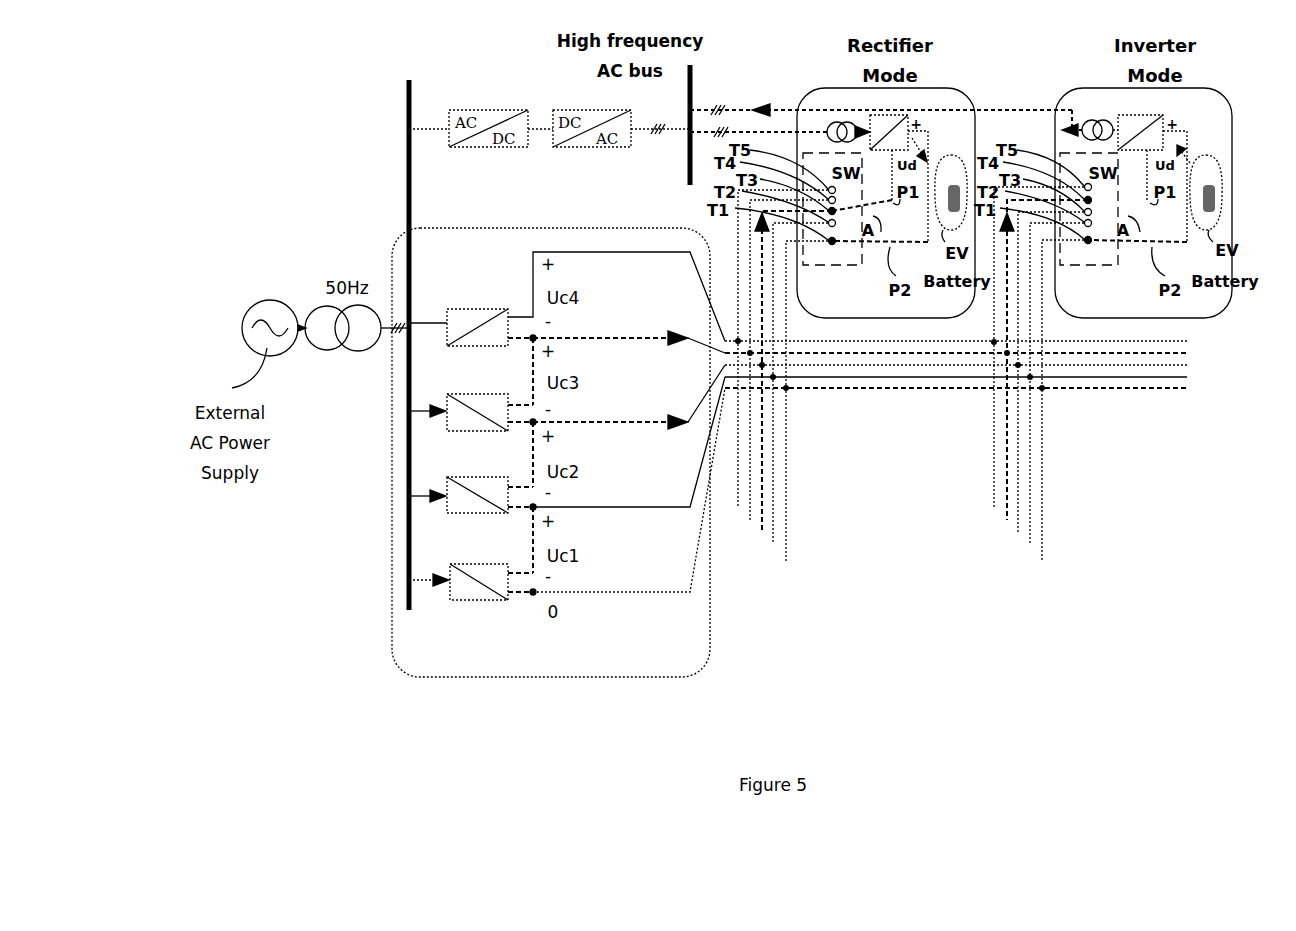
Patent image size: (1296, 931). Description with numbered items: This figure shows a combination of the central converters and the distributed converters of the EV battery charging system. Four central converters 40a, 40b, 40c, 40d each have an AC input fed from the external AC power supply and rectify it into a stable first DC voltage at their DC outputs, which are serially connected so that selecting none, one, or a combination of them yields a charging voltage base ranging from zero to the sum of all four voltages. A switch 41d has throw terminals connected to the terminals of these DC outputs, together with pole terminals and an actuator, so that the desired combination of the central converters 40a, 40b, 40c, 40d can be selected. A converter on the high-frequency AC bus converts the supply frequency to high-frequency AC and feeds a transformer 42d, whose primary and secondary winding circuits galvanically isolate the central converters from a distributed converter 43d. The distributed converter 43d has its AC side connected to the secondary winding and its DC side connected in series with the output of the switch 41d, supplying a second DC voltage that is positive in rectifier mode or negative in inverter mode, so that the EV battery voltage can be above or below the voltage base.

The central converter 40a is at (496, 600).
The central converter 40b is at (500, 513).
The central converter 40c is at (500, 431).
The central converter 40d is at (500, 346).
The switch 41d is at (777, 119).
The transformer 42d is at (837, 121).
The distributed converter 43d is at (890, 127).